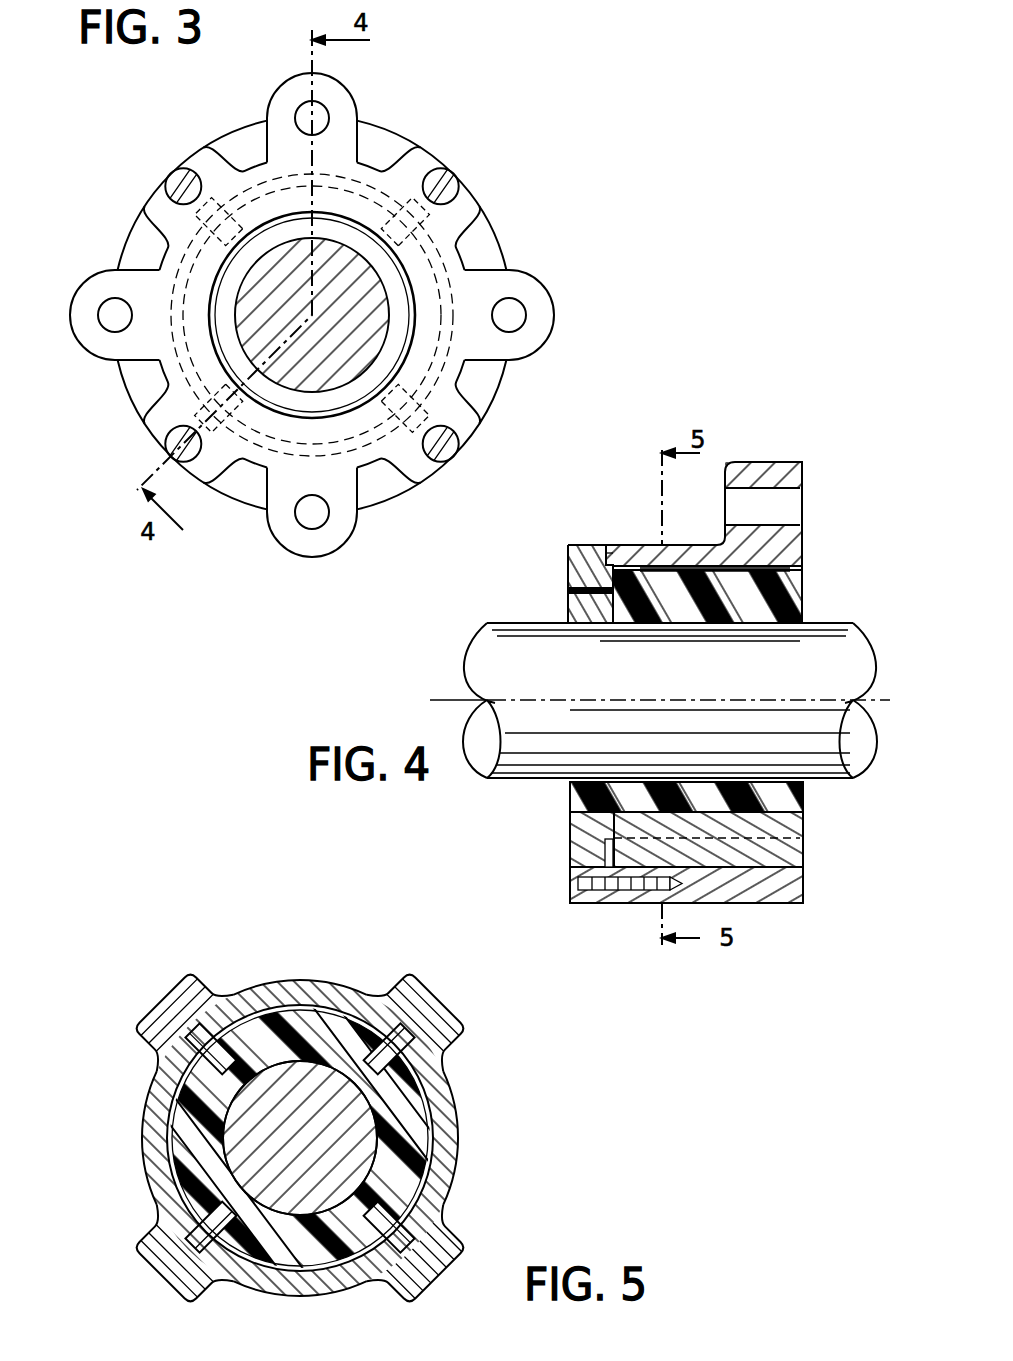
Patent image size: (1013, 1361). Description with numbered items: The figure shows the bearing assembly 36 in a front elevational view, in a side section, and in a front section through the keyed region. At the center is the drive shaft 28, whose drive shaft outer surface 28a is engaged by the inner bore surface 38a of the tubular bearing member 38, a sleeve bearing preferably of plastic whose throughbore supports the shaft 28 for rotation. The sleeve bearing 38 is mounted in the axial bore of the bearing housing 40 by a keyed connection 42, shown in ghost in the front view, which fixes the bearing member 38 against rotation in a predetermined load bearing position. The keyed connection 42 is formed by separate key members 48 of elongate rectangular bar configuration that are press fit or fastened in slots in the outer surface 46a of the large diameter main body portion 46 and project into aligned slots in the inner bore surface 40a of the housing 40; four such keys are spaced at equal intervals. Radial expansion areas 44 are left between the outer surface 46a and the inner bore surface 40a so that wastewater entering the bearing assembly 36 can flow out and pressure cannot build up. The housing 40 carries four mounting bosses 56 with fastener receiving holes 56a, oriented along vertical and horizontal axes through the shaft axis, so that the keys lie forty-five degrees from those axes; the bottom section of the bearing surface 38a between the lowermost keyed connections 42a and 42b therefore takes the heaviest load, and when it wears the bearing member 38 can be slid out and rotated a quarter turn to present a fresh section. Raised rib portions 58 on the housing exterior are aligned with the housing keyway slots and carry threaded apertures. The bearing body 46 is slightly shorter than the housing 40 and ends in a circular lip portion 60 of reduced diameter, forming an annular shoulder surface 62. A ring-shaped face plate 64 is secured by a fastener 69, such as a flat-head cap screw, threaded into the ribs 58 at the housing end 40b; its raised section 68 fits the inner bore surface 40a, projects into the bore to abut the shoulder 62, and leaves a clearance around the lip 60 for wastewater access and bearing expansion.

In FIG. 3, the shaft 28 is at (325, 351).
In FIG. 4, the shaft 28 is at (742, 691).
In FIG. 5, the shaft 28 is at (284, 1152).
In FIG. 4, the drive shaft outer surface 28a is at (452, 700).
In FIG. 5, the drive shaft outer surface 28a is at (424, 1153).
In FIG. 3, the bearing assembly 36 is at (325, 313).
In FIG. 3, the tubular bearing member 38 is at (434, 155).
In FIG. 4, the tubular bearing member 38 is at (810, 796).
In FIG. 5, the tubular bearing member 38 is at (177, 1153).
In FIG. 5, the inner bore surface 38a is at (270, 1068).
In FIG. 3, the bearing housing 40 is at (358, 88).
In FIG. 5, the bearing housing 40 is at (142, 1082).
In FIG. 4, the inner bore surface 40a is at (697, 568).
In FIG. 5, the inner bore surface 40a is at (300, 1004).
In FIG. 4, the end 40b is at (598, 545).
In FIG. 3, the keyed connection 42 is at (430, 405).
In FIG. 5, the lowermost keyed connection 42a is at (180, 1229).
In FIG. 5, the lowermost keyed connection 42b is at (420, 1230).
In FIG. 3, the radial expansion areas 44 is at (177, 257).
In FIG. 4, the radial expansion areas 44 is at (802, 568).
In FIG. 4, the main body portion 46 is at (793, 586).
In FIG. 4, the outer surface 46a is at (653, 567).
In FIG. 5, the outer surface 46a is at (347, 1022).
In FIG. 4, the key members 48 is at (790, 856).
In FIG. 5, the key members 48 is at (420, 1027).
In FIG. 3, the mounting bosses 56 is at (93, 272).
In FIG. 4, the mounting bosses 56 is at (750, 462).
In FIG. 3, the fastener receiving holes 56a is at (515, 311).
In FIG. 4, the fastener receiving holes 56a is at (783, 491).
In FIG. 5, the raised rib portions 58 is at (174, 992).
In FIG. 4, the circular lip portion 60 is at (577, 612).
In FIG. 4, the annular shoulder surface 62 is at (610, 577).
In FIG. 4, the face plate 64 is at (575, 556).
In FIG. 4, the raised section 68 is at (592, 562).
In FIG. 4, the fastener 69 is at (588, 895).